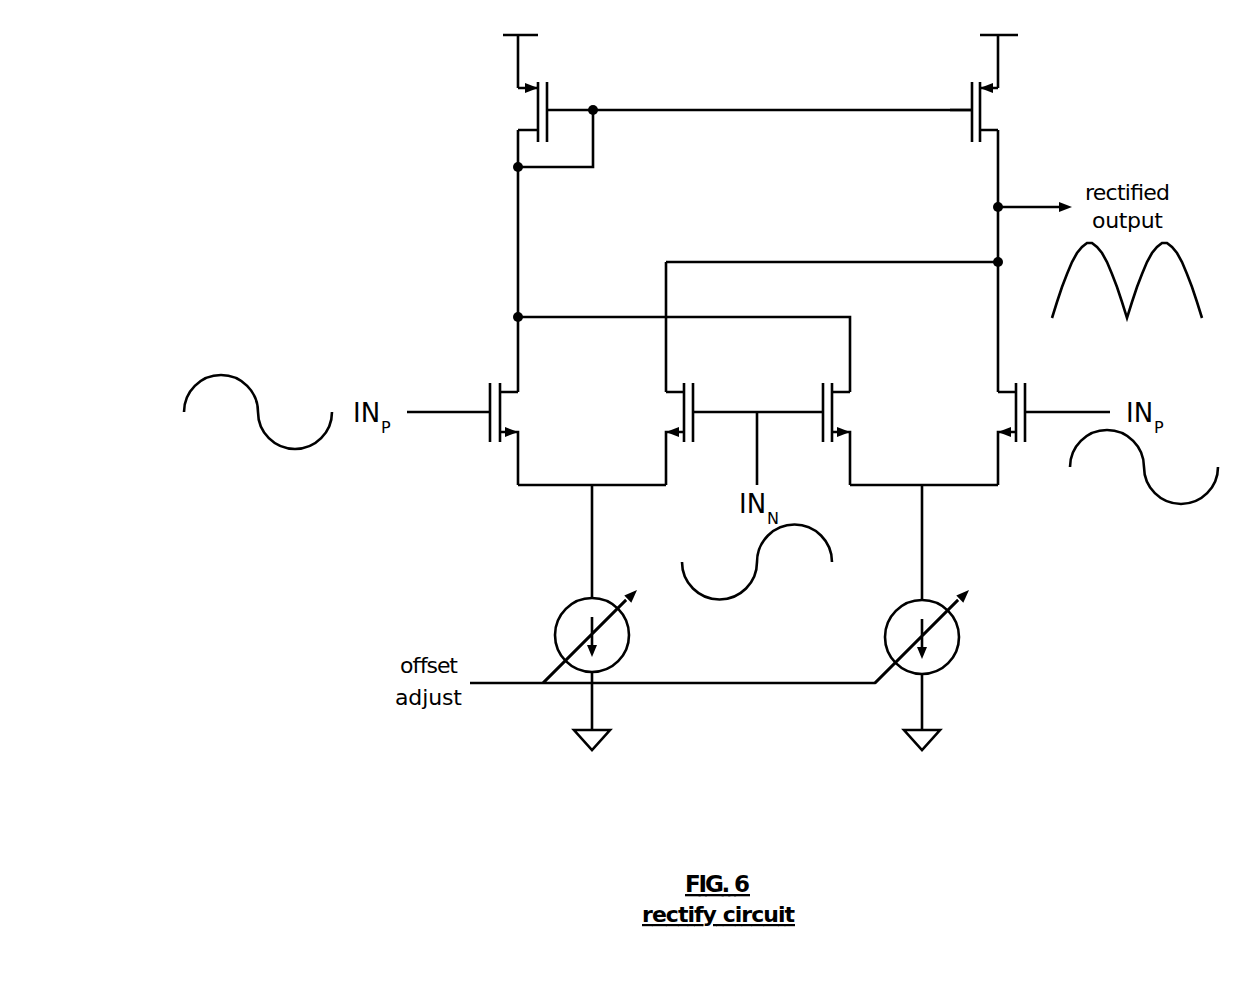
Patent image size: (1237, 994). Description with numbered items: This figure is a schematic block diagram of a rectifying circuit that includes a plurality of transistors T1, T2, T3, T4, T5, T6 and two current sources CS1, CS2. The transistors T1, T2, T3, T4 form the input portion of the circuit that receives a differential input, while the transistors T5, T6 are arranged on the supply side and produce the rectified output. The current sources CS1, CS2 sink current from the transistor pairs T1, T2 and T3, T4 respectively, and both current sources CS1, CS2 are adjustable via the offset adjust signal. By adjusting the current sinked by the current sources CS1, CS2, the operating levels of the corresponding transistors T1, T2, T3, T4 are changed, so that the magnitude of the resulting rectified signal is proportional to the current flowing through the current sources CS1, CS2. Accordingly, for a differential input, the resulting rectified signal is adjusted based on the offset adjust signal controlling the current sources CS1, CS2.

The transistor T1 is at (479, 434).
The transistor T2 is at (726, 434).
The transistor T3 is at (854, 434).
The transistor T4 is at (1036, 434).
The transistor T5 is at (538, 112).
The transistor T6 is at (992, 112).
The current source CS1 is at (563, 640).
The current source CS2 is at (945, 641).